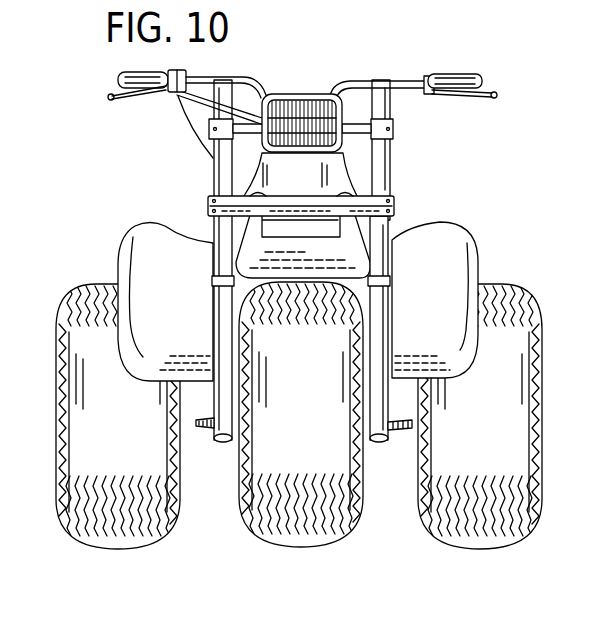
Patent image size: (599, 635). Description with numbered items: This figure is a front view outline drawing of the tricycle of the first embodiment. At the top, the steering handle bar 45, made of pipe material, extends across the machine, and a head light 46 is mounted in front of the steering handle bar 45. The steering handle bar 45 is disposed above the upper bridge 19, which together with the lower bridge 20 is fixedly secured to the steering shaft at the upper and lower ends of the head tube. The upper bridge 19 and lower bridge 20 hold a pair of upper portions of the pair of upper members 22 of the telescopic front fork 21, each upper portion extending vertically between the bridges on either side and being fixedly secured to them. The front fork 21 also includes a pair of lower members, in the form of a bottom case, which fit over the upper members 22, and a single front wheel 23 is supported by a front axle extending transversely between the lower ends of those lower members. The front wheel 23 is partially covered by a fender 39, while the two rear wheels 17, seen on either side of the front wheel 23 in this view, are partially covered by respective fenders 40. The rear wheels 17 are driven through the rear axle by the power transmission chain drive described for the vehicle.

The rear wheels 17 is at (65, 500).
The upper bridge 19 is at (218, 127).
The lower bridge 20 is at (380, 200).
The telescopic front fork 21 is at (394, 335).
The upper members 22 is at (216, 318).
The front wheel 23 is at (250, 513).
The fender 39 is at (345, 243).
The fender 40 is at (152, 232).
The steering handle bar 45 is at (381, 82).
The head light 46 is at (286, 106).